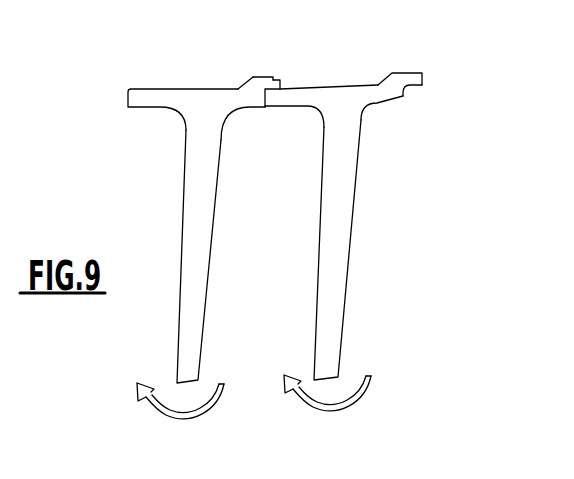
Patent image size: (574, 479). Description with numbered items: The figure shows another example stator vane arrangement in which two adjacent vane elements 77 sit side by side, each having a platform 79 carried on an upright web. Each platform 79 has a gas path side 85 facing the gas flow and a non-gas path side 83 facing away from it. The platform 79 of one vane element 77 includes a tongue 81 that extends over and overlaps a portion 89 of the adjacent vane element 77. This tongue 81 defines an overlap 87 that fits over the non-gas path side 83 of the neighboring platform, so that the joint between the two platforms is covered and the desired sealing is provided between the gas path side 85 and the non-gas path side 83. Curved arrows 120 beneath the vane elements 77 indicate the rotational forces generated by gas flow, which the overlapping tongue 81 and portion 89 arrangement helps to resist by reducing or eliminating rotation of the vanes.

The vane element 77 is at (349, 244).
The platform 79 is at (151, 78).
The tongue 81 is at (273, 77).
The non-gas path side 83 is at (237, 78).
The gas path side 85 is at (290, 116).
The overlap 87 is at (419, 102).
The portion of adjacent vane element 89 is at (122, 77).
The arrow indicating rotational forces 120 is at (140, 400).